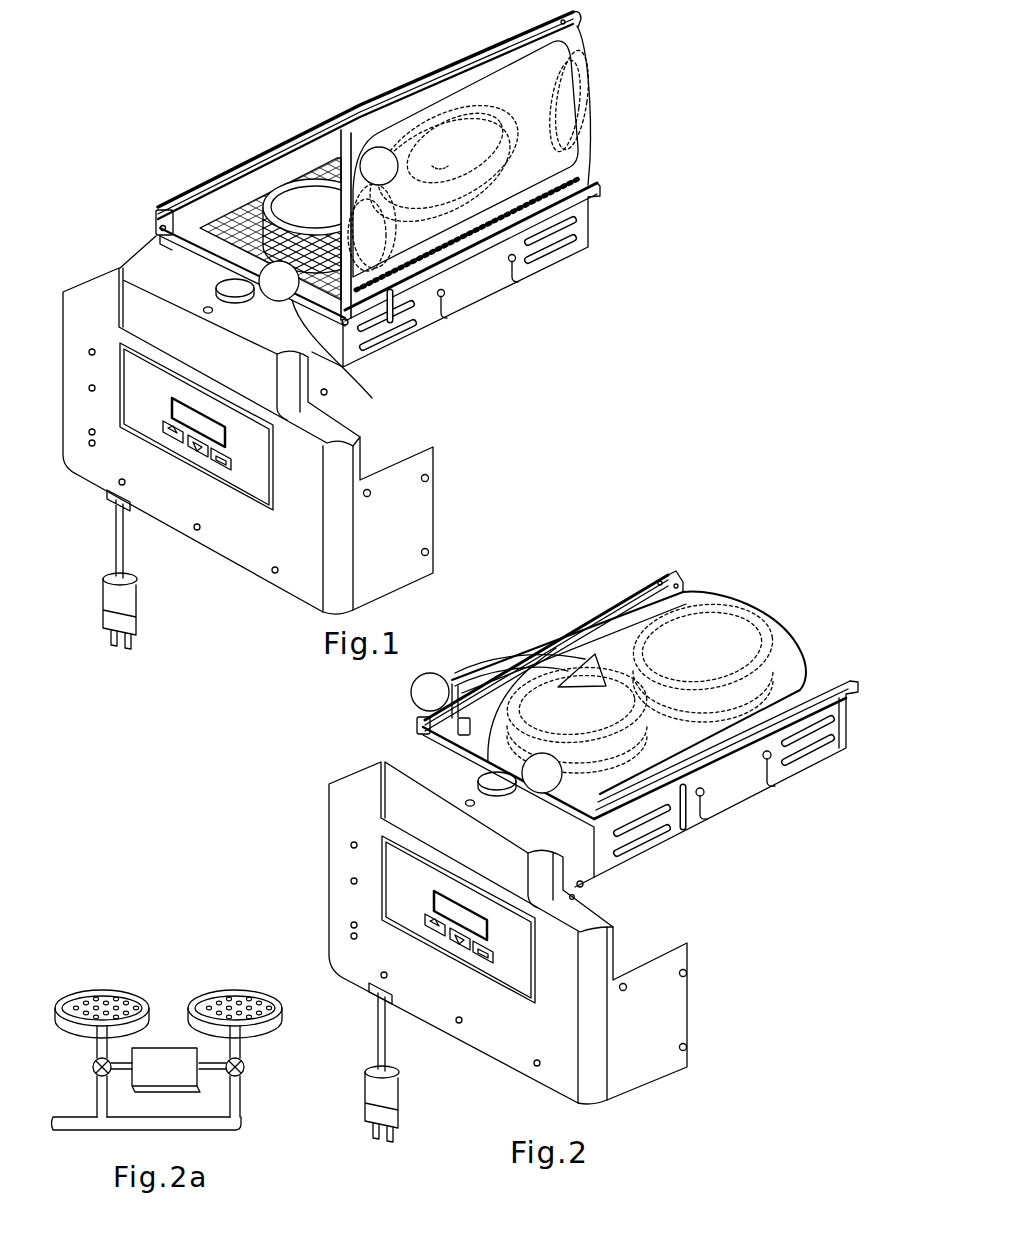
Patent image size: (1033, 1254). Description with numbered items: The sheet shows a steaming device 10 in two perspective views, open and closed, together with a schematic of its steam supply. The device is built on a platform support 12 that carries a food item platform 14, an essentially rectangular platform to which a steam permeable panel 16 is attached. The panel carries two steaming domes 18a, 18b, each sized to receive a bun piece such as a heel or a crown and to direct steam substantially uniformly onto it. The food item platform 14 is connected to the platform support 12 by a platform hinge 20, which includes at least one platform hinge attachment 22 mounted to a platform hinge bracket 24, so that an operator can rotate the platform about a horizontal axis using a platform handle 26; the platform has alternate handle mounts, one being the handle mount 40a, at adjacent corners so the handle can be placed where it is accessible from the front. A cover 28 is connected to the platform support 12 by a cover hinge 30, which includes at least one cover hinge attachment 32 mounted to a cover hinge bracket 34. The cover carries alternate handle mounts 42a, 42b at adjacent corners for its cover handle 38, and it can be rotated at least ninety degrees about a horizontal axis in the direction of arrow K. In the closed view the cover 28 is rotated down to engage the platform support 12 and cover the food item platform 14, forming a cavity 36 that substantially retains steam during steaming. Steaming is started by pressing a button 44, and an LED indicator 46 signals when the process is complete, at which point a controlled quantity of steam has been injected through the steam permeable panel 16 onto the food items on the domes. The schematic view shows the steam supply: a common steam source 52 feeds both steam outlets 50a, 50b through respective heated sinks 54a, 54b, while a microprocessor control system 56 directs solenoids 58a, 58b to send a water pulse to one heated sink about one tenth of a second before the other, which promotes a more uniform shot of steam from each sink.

In FIG. 1, the steaming device 10 is at (122, 145).
In FIG. 1, the platform support 12 is at (343, 367).
In FIG. 1, the food item platform 14 is at (193, 227).
In FIG. 1, the steam permeable panel 16 is at (222, 222).
In FIG. 1, the steaming dome 18a is at (235, 257).
In FIG. 1, the steaming dome 18b is at (570, 138).
In FIG. 1, the platform hinge 20 is at (157, 247).
In FIG. 1, the platform hinge attachment 22 is at (163, 232).
In FIG. 1, the platform hinge bracket 24 is at (275, 162).
In FIG. 1, the platform handle 26 is at (275, 290).
In FIG. 2, the platform handle 26 is at (548, 785).
In FIG. 1, the cover 28 is at (557, 83).
In FIG. 2, the cover 28 is at (777, 633).
In FIG. 1, the cover hinge 30 is at (441, 310).
In FIG. 1, the cover hinge attachment 32 is at (405, 345).
In FIG. 1, the cover hinge bracket 34 is at (597, 183).
In FIG. 2, the cavity 36 is at (732, 735).
In FIG. 1, the cover handle 38 is at (376, 154).
In FIG. 2, the cover handle 38 is at (438, 688).
In FIG. 1, the alternate handle mount 40a is at (373, 398).
In FIG. 1, the alternate handle mount 42a is at (343, 124).
In FIG. 1, the alternate handle mount 42b is at (577, 16).
In FIG. 2, the button 44 is at (493, 787).
In FIG. 1, the LED indicator 46 is at (208, 308).
In FIG. 2, the LED indicator 46 is at (466, 803).
In FIG. 2A, the steam outlet 50a is at (102, 992).
In FIG. 2A, the steam outlet 50b is at (235, 992).
In FIG. 2A, the common steam source 52 is at (88, 1126).
In FIG. 2A, the heated sink 54a is at (96, 1055).
In FIG. 2A, the heated sink 54b is at (244, 1055).
In FIG. 2A, the microprocessor control system 56 is at (155, 1058).
In FIG. 2A, the solenoid 58a is at (95, 1080).
In FIG. 2A, the solenoid 58b is at (247, 1080).
In FIG. 2, the arrow K is at (505, 661).